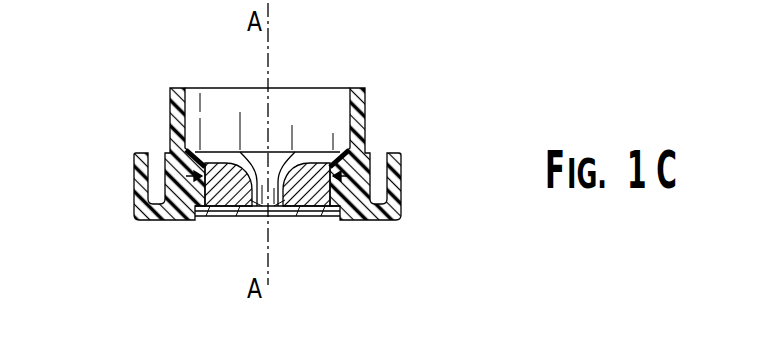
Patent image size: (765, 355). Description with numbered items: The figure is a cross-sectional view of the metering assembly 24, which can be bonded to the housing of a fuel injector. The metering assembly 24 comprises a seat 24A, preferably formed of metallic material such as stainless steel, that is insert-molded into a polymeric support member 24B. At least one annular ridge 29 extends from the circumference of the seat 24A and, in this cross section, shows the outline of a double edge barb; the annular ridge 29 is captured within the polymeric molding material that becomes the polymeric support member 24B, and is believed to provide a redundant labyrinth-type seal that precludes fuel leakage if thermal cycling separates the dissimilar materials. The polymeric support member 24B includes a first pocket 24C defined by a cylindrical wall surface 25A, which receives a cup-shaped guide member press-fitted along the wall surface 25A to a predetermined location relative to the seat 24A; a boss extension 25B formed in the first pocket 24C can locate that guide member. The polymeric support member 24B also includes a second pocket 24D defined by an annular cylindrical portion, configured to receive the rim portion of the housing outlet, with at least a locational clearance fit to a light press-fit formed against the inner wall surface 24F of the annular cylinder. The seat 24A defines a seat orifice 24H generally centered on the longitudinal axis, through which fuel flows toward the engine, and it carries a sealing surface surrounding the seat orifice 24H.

The metering assembly 24 is at (373, 86).
The seat 24A is at (221, 196).
The polymeric support member 24B is at (173, 101).
The first pocket 24C is at (195, 106).
The second pocket 24D is at (158, 206).
The inner wall surface 24F is at (156, 168).
The seat orifice 24H is at (272, 202).
The cylindrical wall surface 25A is at (345, 95).
The boss extension 25B is at (198, 150).
The annular ridge 29 is at (352, 210).